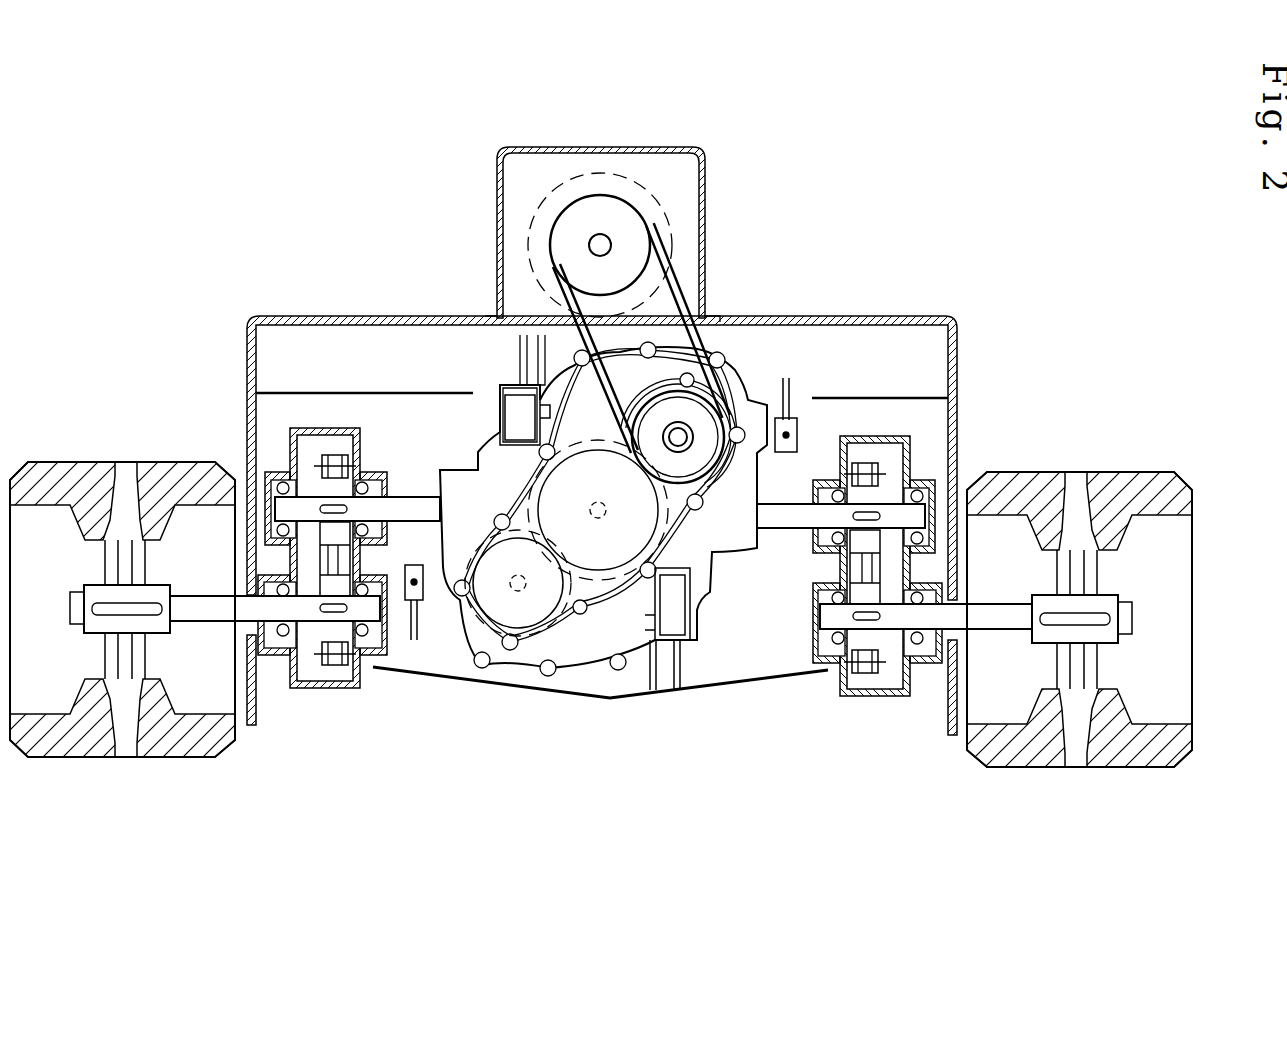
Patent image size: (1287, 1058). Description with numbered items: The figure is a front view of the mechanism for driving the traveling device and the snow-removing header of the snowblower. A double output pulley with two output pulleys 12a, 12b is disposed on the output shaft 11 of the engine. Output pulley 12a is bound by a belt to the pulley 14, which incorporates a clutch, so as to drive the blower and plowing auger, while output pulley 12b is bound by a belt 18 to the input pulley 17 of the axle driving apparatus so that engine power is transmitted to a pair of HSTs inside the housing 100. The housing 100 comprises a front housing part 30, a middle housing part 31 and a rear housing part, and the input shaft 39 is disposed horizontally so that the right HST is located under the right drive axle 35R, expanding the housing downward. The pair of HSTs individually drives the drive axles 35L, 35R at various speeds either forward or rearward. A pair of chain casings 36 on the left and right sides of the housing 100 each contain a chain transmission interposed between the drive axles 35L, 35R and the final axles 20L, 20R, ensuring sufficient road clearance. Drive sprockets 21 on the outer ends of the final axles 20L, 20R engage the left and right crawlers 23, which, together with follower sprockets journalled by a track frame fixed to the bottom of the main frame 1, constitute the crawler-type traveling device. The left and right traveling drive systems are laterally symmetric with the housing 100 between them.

The main frame 1 is at (252, 318).
The output shaft 11 is at (600, 243).
The output pulley 12a is at (532, 218).
The output pulley 12b is at (648, 225).
The pulley 14 is at (598, 540).
The input pulley 17 is at (745, 390).
The belt 18 is at (688, 300).
The final axle 20R is at (200, 594).
The final axle 20L is at (1000, 602).
The drive sprocket 21 is at (88, 645).
The crawler 23 is at (88, 462).
The front housing part 30 is at (565, 640).
The middle housing part 31 is at (500, 385).
The drive axle 35R is at (415, 497).
The drive axle 35L is at (775, 540).
The chain casing 36 is at (322, 690).
The input shaft 39 is at (690, 445).
The housing 100 is at (440, 658).